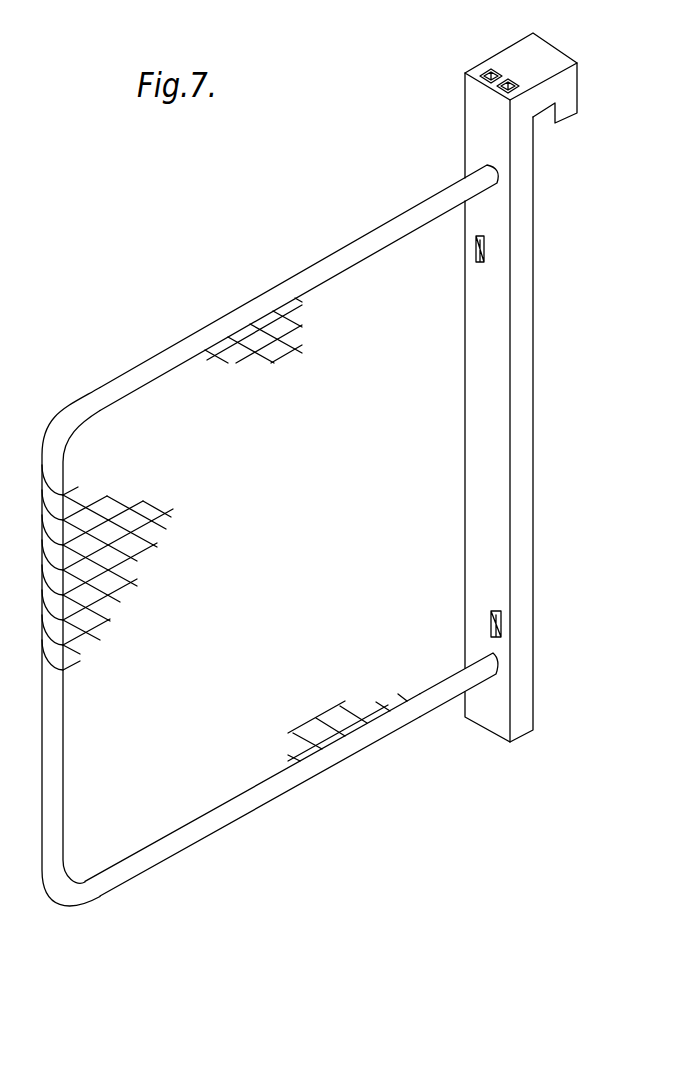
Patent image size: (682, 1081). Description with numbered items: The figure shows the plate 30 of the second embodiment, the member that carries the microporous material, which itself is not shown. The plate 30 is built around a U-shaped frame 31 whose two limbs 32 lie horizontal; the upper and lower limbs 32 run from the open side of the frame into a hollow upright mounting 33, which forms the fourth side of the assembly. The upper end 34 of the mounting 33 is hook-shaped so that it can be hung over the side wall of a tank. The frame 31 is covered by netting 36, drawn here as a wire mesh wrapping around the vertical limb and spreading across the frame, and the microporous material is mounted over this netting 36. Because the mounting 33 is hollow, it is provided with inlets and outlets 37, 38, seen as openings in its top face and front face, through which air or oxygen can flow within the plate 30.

The plate 30 is at (236, 291).
The U-shaped frame 31 is at (257, 821).
The limbs 32 is at (405, 711).
The hollow upright mounting 33 is at (493, 410).
The upper end 34 is at (555, 93).
The netting 36 is at (117, 513).
The inlets 37 is at (490, 71).
The outlets 38 is at (515, 80).